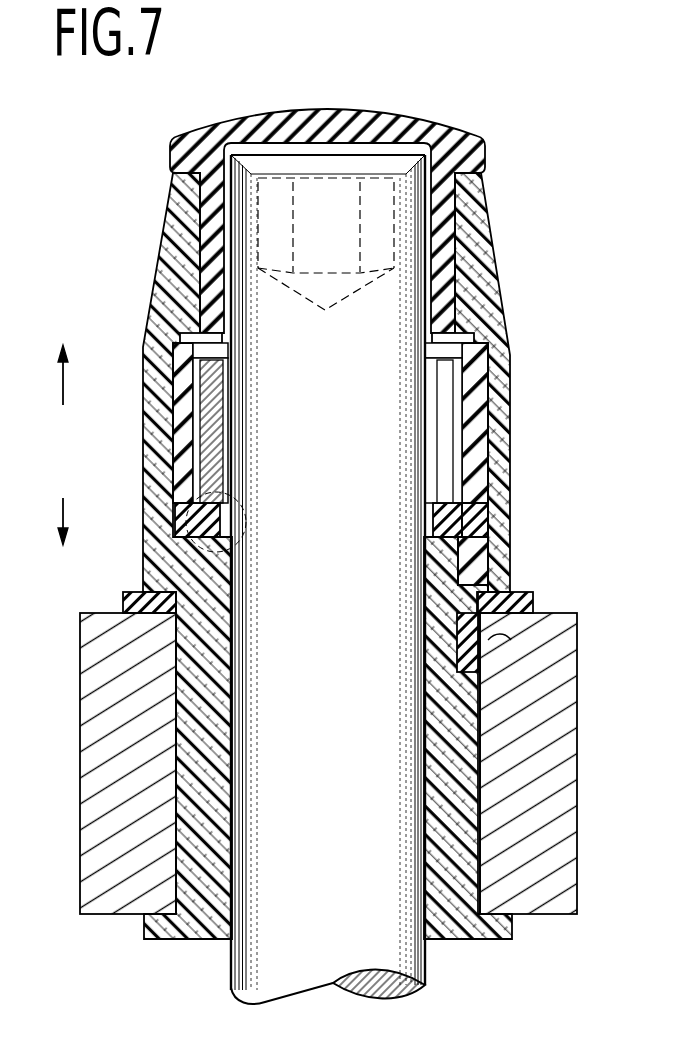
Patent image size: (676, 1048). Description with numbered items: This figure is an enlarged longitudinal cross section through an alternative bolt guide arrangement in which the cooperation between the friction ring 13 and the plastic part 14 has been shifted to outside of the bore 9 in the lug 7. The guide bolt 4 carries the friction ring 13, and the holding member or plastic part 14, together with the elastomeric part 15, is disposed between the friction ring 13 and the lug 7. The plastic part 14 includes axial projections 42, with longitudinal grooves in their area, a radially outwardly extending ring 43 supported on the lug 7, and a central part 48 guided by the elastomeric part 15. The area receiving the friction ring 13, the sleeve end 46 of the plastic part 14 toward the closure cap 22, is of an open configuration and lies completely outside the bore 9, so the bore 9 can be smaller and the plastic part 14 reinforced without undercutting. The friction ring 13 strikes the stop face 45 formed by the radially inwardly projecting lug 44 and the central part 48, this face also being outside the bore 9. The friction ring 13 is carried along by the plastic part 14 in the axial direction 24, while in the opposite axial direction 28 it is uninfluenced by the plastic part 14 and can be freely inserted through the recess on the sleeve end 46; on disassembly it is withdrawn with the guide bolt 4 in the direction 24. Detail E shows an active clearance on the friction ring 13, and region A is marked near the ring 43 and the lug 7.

The closure cap 22 is at (415, 125).
The elastomeric part 15 is at (497, 262).
The sleeve end of the holding member 46 is at (483, 372).
The stop face 45 is at (443, 498).
The friction ring 13 is at (447, 433).
The holding member (plastic part) 14 is at (473, 510).
The radially inwardly projecting lug 44 is at (463, 530).
The central part 48 is at (490, 557).
The lug 7 is at (571, 784).
The radially outwardly extending ring 43 is at (510, 593).
The axial projections 42 is at (482, 660).
The bore 9 is at (480, 730).
The region A is at (512, 633).
The detail E is at (163, 518).
The guide bolt 4 is at (267, 965).
The axial direction 24 is at (62, 383).
The opposite axial direction 28 is at (62, 510).